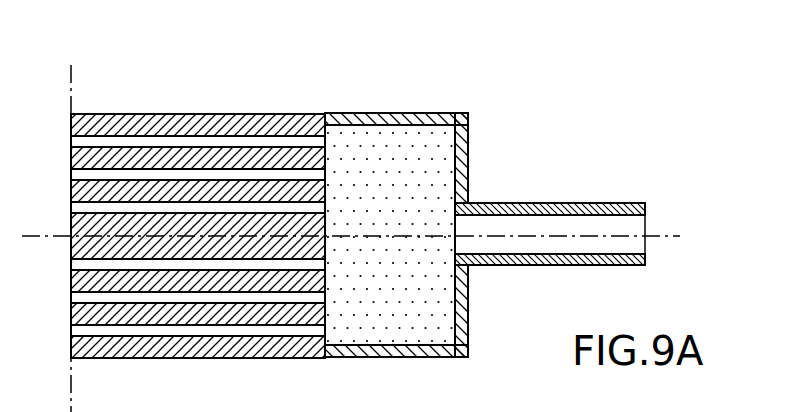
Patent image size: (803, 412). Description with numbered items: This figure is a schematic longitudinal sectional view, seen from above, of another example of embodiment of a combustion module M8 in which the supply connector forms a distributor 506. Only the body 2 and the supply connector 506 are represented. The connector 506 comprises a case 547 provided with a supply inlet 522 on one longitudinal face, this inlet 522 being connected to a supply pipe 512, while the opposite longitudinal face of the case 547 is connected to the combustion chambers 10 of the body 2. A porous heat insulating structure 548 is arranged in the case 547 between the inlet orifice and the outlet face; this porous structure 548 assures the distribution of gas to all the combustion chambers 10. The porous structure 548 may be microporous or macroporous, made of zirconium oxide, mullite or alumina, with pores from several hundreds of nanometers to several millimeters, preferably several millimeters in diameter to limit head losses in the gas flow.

The body 2 is at (198, 220).
The combustion module M8 is at (264, 80).
The combustion chambers 10 is at (173, 304).
The supply connector 506 is at (401, 222).
The case 547 is at (388, 118).
The porous heat insulating structure 548 is at (397, 338).
The supply pipe 512 is at (617, 205).
The supply inlet 522 is at (470, 265).